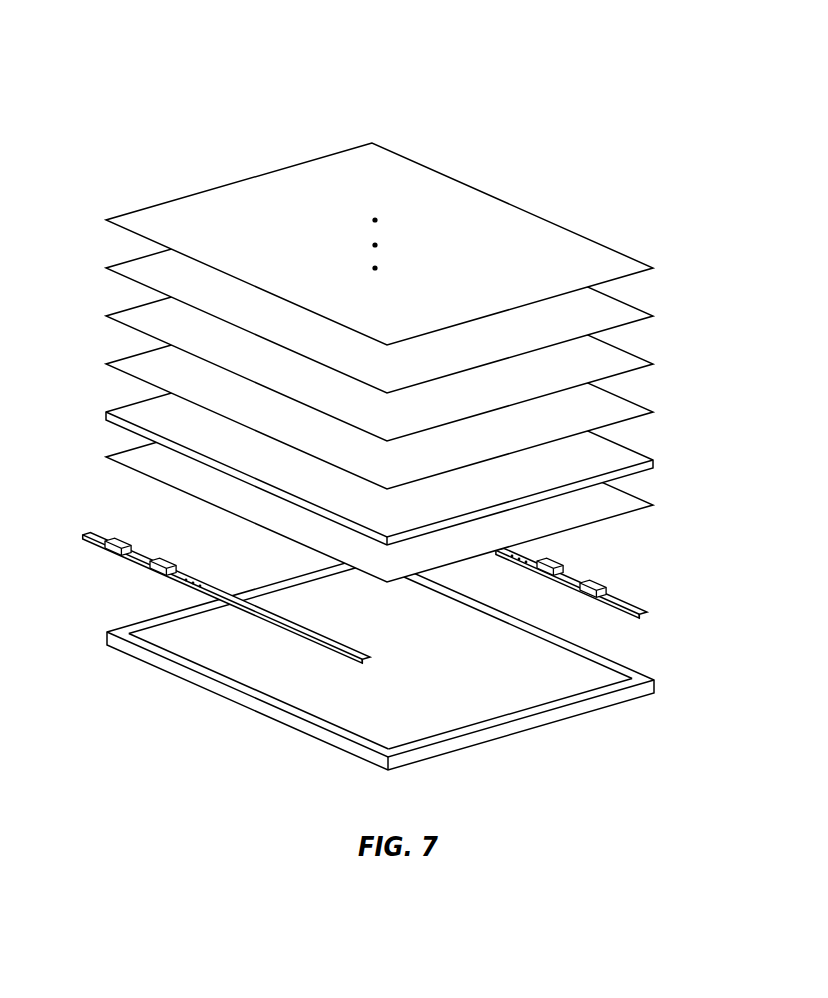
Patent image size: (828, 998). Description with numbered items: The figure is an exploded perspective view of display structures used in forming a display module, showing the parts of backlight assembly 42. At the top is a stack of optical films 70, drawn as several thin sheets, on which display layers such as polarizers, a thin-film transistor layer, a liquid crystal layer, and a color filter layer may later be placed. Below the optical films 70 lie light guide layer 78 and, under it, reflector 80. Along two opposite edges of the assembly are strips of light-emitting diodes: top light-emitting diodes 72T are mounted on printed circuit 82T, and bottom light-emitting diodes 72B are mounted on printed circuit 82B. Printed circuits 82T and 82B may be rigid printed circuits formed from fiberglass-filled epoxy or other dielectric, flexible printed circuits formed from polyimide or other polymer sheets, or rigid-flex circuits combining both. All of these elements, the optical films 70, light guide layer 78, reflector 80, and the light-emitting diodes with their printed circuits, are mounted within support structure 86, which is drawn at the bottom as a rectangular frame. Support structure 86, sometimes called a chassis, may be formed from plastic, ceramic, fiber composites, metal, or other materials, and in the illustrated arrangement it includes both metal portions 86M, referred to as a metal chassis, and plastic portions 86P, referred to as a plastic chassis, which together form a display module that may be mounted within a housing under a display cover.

The backlight assembly 42 is at (371, 393).
The optical films 70 is at (662, 260).
The light guide layer 78 is at (634, 456).
The reflector 80 is at (634, 502).
The bottom light-emitting diodes 72B is at (132, 545).
The top light-emitting diodes 72T is at (561, 563).
The printed circuit 82B is at (236, 590).
The printed circuit 82T is at (582, 604).
The support structure 86 is at (345, 666).
The metal portions 86M is at (250, 704).
The plastic portions 86P is at (205, 612).